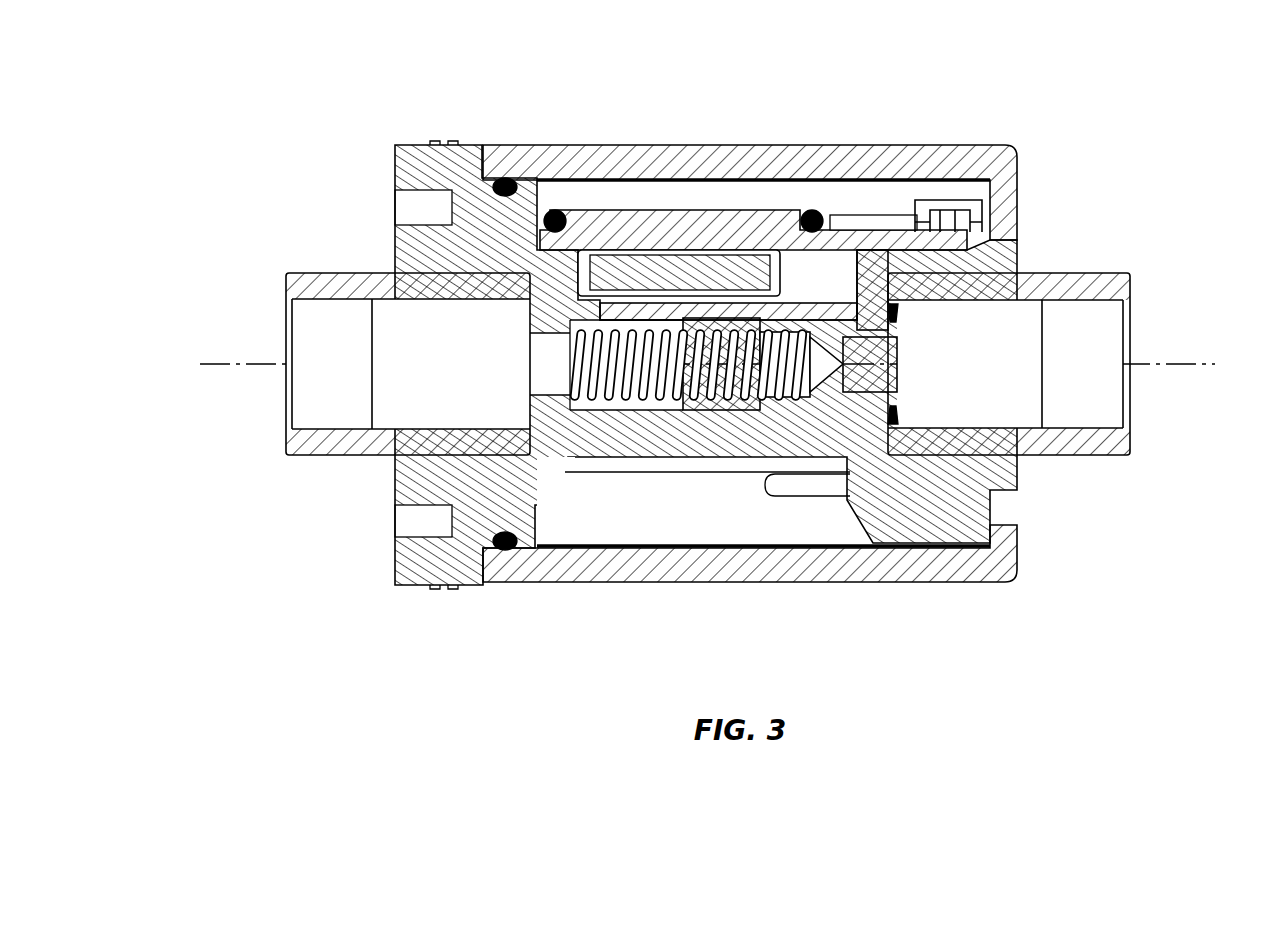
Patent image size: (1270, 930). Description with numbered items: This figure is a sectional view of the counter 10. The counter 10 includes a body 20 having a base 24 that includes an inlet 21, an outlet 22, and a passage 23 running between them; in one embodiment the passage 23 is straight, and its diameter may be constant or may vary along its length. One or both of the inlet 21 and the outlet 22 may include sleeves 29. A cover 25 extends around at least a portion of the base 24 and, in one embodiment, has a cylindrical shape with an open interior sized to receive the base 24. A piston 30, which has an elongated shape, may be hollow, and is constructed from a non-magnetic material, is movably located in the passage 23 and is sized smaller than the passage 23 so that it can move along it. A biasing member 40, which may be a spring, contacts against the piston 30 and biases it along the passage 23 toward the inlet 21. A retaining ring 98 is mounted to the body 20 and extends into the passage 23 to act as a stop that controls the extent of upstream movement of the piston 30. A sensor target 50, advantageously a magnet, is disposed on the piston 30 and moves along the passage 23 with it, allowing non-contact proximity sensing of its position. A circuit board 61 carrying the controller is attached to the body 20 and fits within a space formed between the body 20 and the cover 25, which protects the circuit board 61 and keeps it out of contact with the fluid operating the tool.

The counter 10 is at (838, 84).
The body 20 is at (352, 647).
The inlet 21 is at (1095, 395).
The outlet 22 is at (318, 397).
The passage 23 is at (550, 350).
The base 24 is at (485, 522).
The cover 25 is at (748, 565).
The sleeves 29 is at (345, 443).
The piston 30 is at (841, 400).
The biasing member 40 is at (622, 400).
The sensor target 50 is at (895, 385).
The circuit board 61 is at (685, 230).
The retaining ring 98 is at (897, 318).